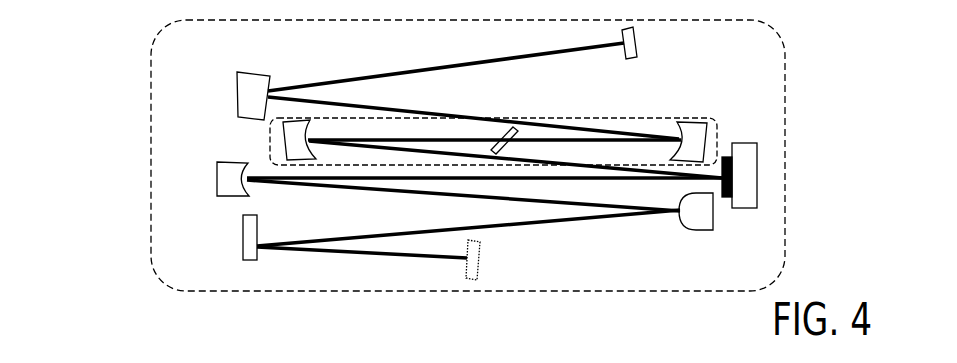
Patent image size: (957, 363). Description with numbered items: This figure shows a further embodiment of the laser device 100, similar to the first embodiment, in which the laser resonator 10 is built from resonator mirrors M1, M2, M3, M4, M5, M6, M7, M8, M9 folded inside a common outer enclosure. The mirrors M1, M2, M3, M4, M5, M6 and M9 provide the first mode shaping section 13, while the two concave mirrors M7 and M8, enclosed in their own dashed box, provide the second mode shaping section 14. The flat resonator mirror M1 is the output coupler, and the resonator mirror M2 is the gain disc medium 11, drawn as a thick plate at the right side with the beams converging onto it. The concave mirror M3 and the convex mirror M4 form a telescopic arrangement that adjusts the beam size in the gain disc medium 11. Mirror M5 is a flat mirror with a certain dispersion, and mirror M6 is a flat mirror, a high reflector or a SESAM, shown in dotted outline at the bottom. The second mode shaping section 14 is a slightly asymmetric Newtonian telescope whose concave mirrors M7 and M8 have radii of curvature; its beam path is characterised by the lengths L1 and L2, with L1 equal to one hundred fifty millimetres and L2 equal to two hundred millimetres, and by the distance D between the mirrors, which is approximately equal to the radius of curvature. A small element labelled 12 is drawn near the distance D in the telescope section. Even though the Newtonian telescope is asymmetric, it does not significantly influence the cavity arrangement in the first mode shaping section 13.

The laser device 100 is at (133, 69).
The laser resonator 10 is at (328, 217).
The gain disc medium 11 is at (733, 168).
The beam splitter element 12 is at (524, 122).
The first mode shaping section 13 is at (783, 137).
The second mode shaping section 14 is at (717, 123).
The distance between the mirrors D is at (523, 138).
The first telescope length L1 is at (566, 124).
The second telescope length L2 is at (458, 152).
The flat resonator mirror M1 is at (236, 96).
The resonator mirror M2 is at (747, 189).
The concave resonator mirror M3 is at (216, 179).
The convex resonator mirror M4 is at (696, 225).
The flat resonator mirror with dispersion M5 is at (229, 237).
The flat resonator mirror M6 is at (489, 260).
The concave resonator mirror M7 is at (680, 133).
The concave resonator mirror M8 is at (269, 140).
The resonator mirror M9 is at (649, 44).